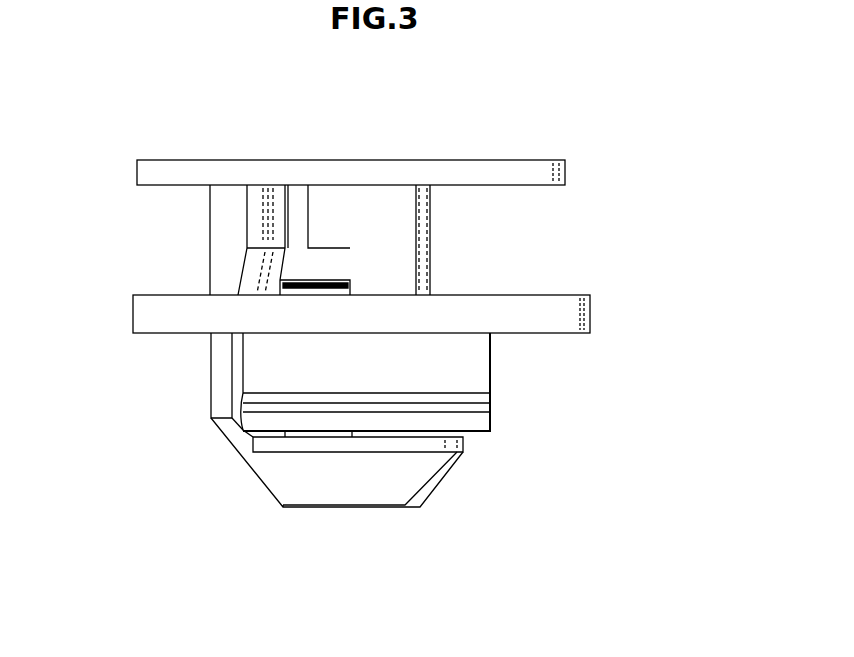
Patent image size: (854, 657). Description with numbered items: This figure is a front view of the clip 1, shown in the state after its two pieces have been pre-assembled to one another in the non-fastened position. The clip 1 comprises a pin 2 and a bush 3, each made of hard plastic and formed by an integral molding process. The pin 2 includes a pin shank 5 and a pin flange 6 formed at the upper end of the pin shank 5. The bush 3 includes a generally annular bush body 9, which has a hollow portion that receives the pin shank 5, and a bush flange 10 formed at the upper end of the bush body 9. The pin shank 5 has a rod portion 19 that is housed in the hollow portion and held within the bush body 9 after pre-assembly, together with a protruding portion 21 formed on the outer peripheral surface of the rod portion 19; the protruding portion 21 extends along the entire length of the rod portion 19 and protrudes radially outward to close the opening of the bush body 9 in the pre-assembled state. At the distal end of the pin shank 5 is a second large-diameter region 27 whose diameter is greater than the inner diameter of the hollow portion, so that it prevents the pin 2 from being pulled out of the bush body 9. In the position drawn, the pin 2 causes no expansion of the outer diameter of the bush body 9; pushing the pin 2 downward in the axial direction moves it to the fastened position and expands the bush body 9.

The clip 1 is at (625, 130).
The pin 2 is at (131, 142).
The bush 3 is at (152, 341).
The pin shank 5 is at (70, 208).
The pin flange 6 is at (497, 160).
The bush body 9 is at (492, 373).
The bush flange 10 is at (570, 295).
The rod portion 19 is at (297, 210).
The protruding portion 21 is at (218, 266).
The second large-diameter region 27 is at (296, 486).